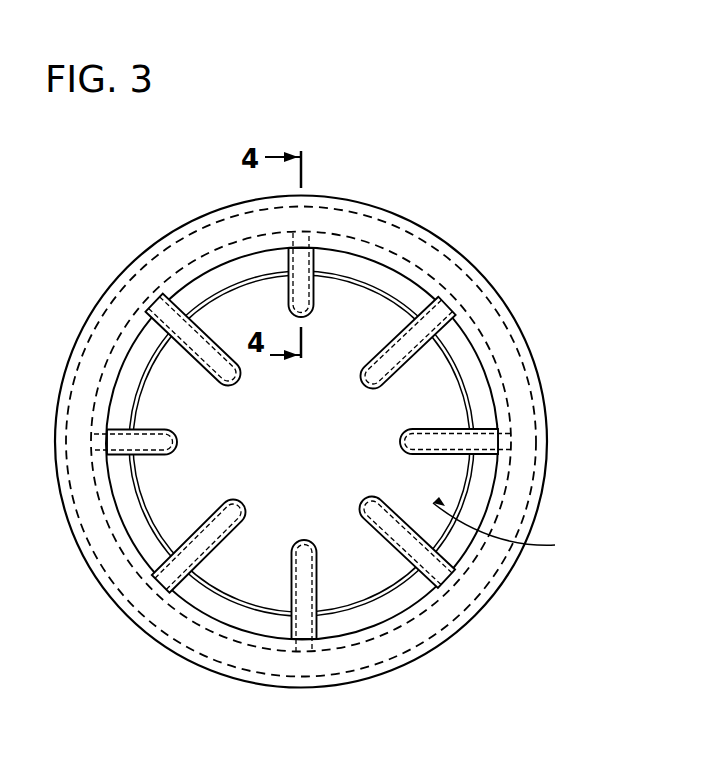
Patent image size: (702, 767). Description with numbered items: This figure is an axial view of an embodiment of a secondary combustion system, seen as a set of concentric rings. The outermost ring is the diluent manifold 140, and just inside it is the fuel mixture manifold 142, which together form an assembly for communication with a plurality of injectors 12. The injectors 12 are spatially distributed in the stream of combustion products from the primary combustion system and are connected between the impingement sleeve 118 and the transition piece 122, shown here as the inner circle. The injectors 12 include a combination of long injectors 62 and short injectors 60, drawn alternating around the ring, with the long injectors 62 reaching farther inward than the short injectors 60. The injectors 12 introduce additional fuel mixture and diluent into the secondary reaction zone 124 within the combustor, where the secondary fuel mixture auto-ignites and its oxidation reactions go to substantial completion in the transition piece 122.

The injector 12 is at (314, 307).
The short injector 60 is at (308, 322).
The long injector 62 is at (380, 384).
The impingement sleeve 118 is at (470, 545).
The transition piece 122 is at (470, 402).
The secondary reaction zone 124 is at (500, 540).
The diluent manifold 140 is at (430, 235).
The fuel mixture manifold 142 is at (467, 276).